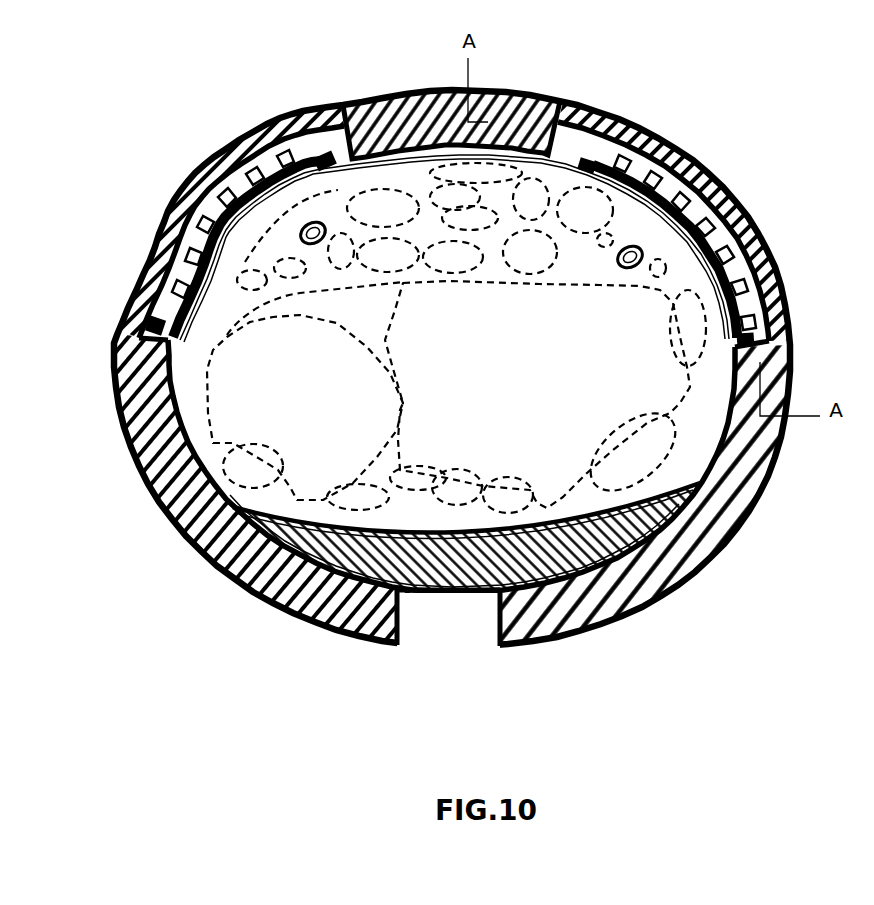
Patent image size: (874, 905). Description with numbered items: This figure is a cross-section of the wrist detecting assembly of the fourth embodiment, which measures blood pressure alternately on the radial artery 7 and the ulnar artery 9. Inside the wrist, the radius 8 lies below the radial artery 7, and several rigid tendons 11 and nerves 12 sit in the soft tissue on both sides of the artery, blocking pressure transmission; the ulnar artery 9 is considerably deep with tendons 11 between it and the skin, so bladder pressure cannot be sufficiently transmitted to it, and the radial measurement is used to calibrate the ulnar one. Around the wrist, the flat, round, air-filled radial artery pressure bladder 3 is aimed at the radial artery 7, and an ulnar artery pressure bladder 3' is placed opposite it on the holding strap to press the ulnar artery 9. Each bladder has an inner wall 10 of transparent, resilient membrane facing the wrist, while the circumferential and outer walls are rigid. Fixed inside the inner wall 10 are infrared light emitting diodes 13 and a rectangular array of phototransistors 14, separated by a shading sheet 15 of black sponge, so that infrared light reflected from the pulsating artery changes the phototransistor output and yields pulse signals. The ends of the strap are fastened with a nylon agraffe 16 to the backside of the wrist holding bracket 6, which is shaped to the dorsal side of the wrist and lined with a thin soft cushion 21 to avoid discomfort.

The radial artery pressure bladder 3 is at (459, 103).
The ulnar artery pressure bladder 3' is at (333, 105).
The wrist holding bracket 6 is at (460, 560).
The radial artery 7 is at (632, 246).
The radius 8 is at (448, 394).
The ulnar artery 9 is at (313, 222).
The inner wall of the bladder 10 is at (135, 315).
The tendons 11 is at (472, 276).
The nerves 12 is at (531, 199).
The infrared light emitting diodes 13 is at (280, 133).
The phototransistors 14 is at (235, 166).
The shading sheet 15 is at (152, 283).
The nylon agraffe 16 is at (390, 592).
The soft cushion 21 is at (337, 555).